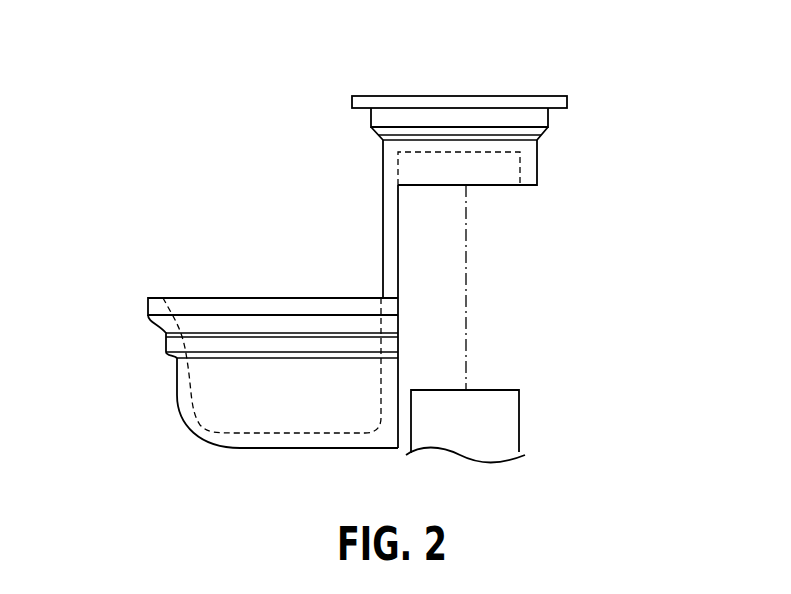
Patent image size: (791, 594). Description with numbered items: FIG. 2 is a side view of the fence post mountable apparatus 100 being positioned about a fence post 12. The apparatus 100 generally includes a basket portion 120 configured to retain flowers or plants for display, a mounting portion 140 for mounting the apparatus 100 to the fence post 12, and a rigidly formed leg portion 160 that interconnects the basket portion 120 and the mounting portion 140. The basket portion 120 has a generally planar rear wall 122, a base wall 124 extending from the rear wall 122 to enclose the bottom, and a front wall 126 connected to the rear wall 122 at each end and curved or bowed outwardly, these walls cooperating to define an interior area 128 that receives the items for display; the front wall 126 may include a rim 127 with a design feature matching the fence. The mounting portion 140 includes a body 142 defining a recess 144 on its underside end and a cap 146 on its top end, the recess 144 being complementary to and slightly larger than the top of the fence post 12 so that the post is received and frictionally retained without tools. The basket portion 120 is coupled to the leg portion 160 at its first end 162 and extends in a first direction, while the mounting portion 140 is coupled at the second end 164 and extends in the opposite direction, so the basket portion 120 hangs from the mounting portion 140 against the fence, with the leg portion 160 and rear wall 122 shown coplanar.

The fence post 12 is at (492, 400).
The fence post mountable apparatus 100 is at (308, 166).
The basket portion 120 is at (176, 433).
The rear wall 122 is at (392, 410).
The base wall 124 is at (240, 440).
The front wall 126 is at (175, 342).
The rim 127 is at (148, 303).
The interior area 128 is at (238, 327).
The mounting portion 140 is at (590, 101).
The body 142 is at (533, 137).
The recess 144 is at (507, 167).
The cap 146 is at (540, 102).
The leg portion 160 is at (369, 233).
The first end 162 is at (393, 273).
The second end 164 is at (393, 195).